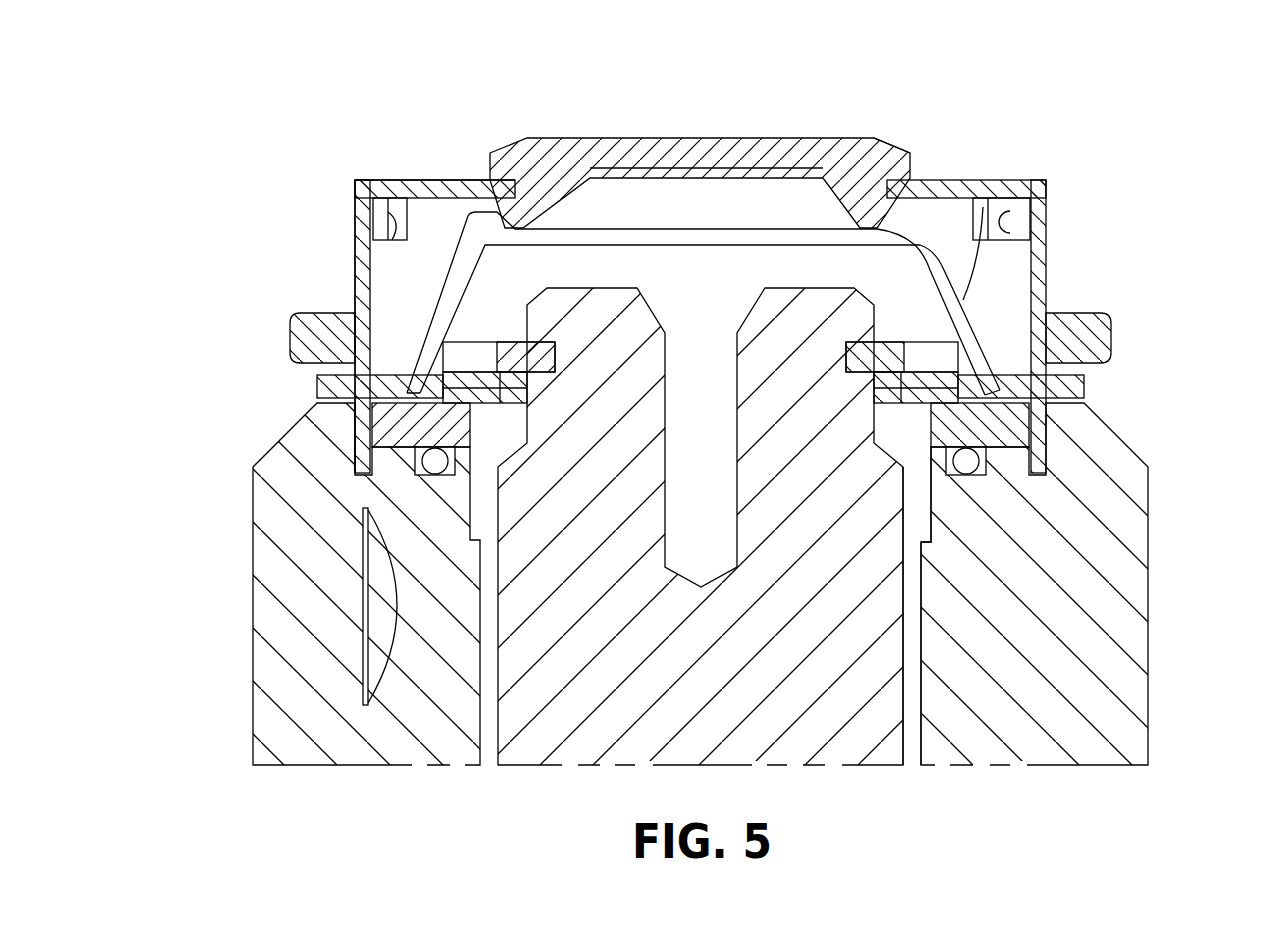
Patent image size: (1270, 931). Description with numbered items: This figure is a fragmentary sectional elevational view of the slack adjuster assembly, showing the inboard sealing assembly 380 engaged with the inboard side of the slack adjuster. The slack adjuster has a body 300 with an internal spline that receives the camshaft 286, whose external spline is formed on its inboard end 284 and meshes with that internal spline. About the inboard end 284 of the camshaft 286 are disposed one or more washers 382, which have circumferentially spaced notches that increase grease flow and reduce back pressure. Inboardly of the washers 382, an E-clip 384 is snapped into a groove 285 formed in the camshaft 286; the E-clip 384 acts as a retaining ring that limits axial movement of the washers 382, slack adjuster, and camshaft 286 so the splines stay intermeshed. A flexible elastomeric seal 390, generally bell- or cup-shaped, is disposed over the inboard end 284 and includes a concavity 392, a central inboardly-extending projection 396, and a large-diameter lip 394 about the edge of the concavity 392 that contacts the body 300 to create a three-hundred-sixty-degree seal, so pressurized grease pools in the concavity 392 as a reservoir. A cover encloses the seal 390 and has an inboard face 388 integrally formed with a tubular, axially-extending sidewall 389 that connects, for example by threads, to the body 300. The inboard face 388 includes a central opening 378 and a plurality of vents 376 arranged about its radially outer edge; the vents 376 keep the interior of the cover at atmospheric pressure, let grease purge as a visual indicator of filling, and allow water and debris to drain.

The body 300 is at (253, 600).
The inboard sealing assembly 380 is at (353, 155).
The vents 376 is at (363, 182).
The inboard face 388 is at (430, 183).
The central opening 378 is at (517, 190).
The central inboardly-extending projection 396 is at (890, 140).
The concavity 392 is at (983, 207).
The seal 390 is at (975, 329).
The sidewall 389 is at (400, 228).
The E-clip 384 is at (497, 337).
The washers 382 is at (448, 400).
The lip 394 is at (1105, 356).
The inboard end 284 is at (1035, 422).
The groove 285 is at (865, 368).
The camshaft 286 is at (903, 641).